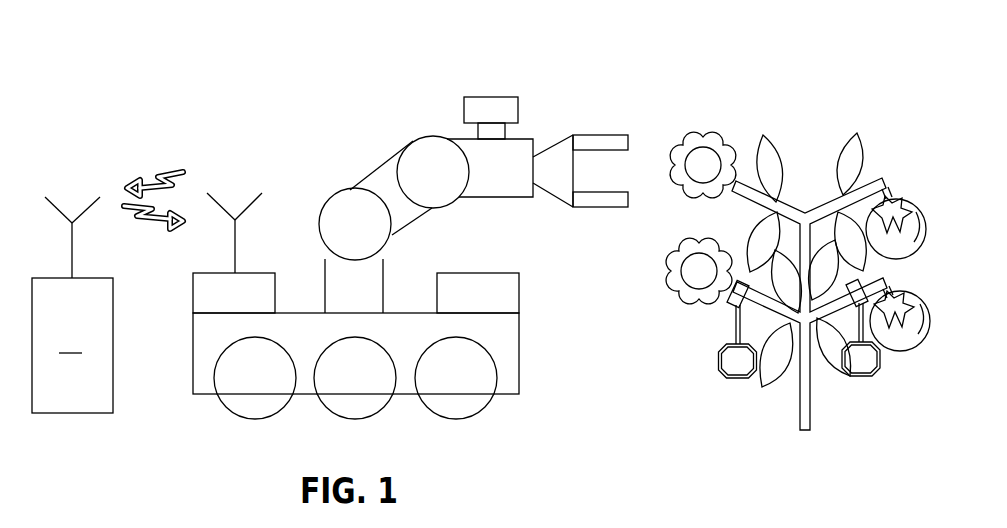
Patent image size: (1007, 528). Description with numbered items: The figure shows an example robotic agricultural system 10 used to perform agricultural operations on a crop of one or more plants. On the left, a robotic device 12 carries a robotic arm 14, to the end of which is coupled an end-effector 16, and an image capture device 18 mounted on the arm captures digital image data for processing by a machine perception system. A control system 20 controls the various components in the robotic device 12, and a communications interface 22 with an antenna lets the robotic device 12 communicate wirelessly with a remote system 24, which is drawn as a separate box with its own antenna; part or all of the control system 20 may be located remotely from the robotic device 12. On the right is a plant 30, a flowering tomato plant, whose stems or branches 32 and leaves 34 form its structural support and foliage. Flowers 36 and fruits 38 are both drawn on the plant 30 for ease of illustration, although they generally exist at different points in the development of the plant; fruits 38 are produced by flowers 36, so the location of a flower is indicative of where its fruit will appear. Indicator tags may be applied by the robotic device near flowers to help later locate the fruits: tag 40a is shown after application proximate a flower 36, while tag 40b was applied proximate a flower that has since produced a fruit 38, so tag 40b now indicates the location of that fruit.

The robotic agricultural system 10 is at (166, 106).
The robotic device 12 is at (192, 388).
The robotic arm 14 is at (319, 212).
The end-effector 16 is at (573, 135).
The image capture device 18 is at (463, 108).
The control system 20 is at (460, 273).
The communications interface 22 is at (192, 303).
The remote system 24 is at (72, 305).
The plant 30 is at (810, 420).
The stems or branches 32 is at (870, 180).
The leaves 34 is at (857, 133).
The flowers 36 is at (700, 130).
The fruits 38 is at (888, 297).
The tag 40a is at (720, 365).
The tag 40b is at (858, 377).